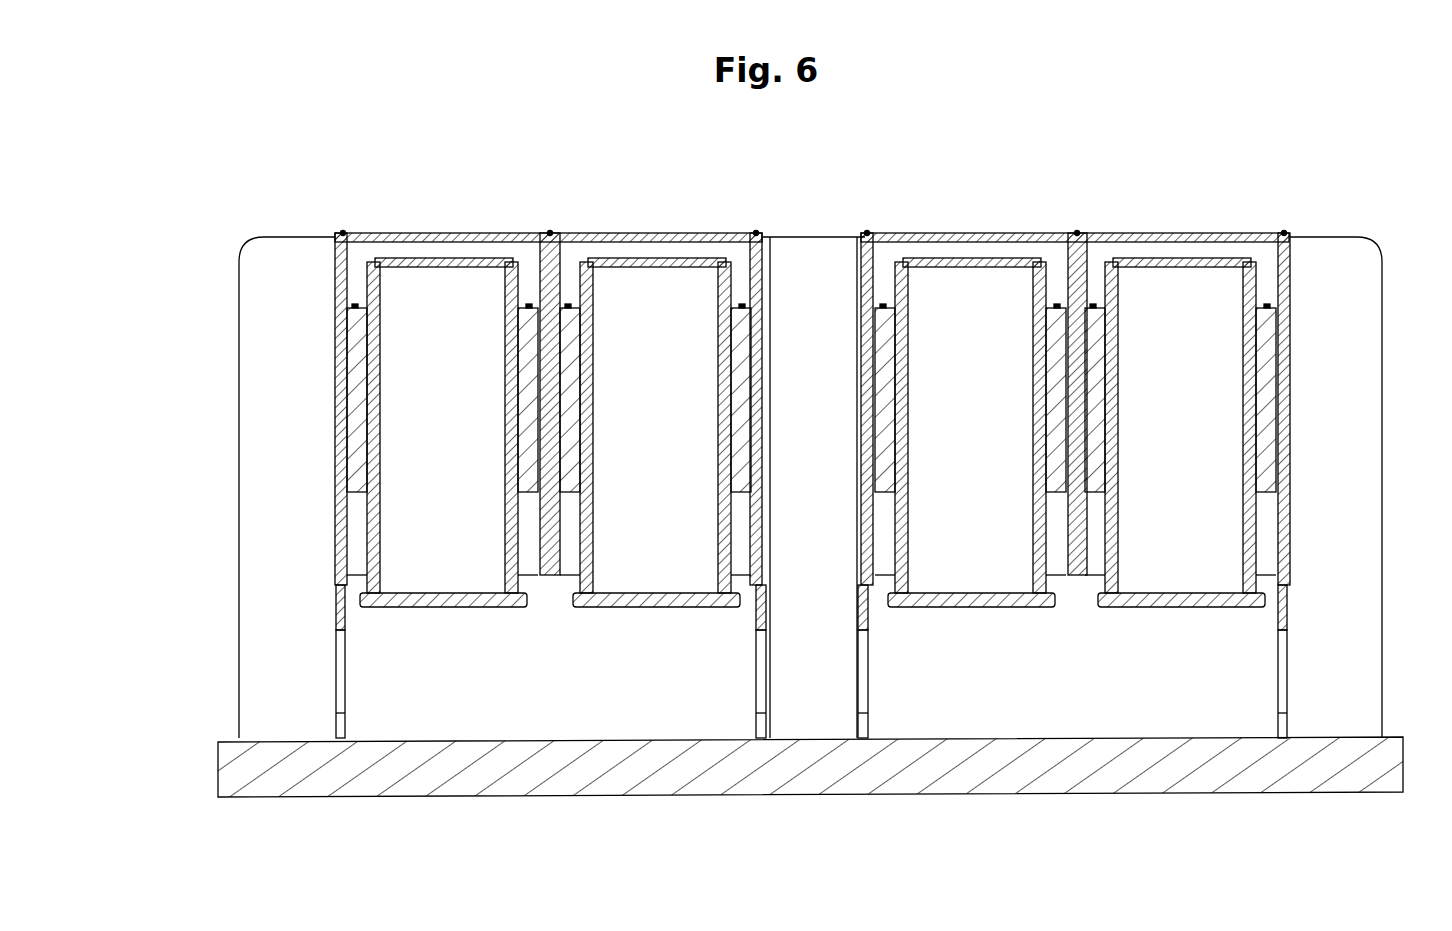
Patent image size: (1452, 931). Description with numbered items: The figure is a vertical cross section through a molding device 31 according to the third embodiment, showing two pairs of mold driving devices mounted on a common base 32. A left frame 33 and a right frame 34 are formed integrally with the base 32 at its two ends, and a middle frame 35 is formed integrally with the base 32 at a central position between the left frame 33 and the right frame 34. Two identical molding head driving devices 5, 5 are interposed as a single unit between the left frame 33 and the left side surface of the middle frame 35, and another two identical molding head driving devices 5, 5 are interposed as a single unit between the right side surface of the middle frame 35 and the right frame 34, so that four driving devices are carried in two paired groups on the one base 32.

The molding head driving device 5 is at (445, 218).
The molding device 31 is at (1322, 168).
The base 32 is at (272, 786).
The left frame 33 is at (240, 500).
The right frame 34 is at (1367, 473).
The middle frame 35 is at (817, 245).